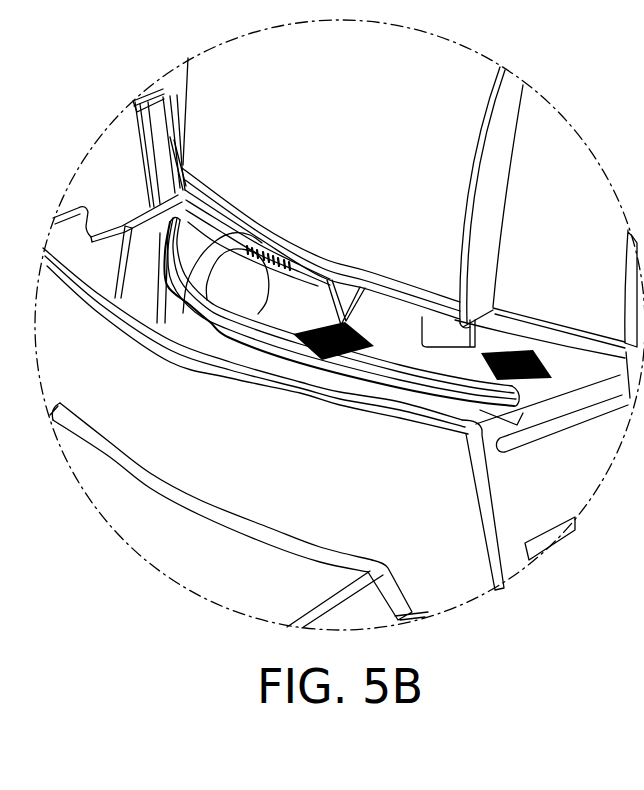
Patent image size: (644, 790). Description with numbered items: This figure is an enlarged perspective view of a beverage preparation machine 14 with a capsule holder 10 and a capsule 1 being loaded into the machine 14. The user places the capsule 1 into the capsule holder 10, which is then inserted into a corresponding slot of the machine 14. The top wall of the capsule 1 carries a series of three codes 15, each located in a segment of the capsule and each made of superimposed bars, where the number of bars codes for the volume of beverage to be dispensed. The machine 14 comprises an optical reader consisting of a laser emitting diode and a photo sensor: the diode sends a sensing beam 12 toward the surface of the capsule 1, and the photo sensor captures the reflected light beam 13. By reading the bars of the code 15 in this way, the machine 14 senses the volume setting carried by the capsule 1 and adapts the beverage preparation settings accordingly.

The capsule 1 is at (425, 360).
The capsule holder 10 is at (226, 450).
The sensing beam 12 is at (322, 291).
The reflected light beam 13 is at (355, 308).
The machine 14 is at (347, 141).
The code 15 is at (188, 315).